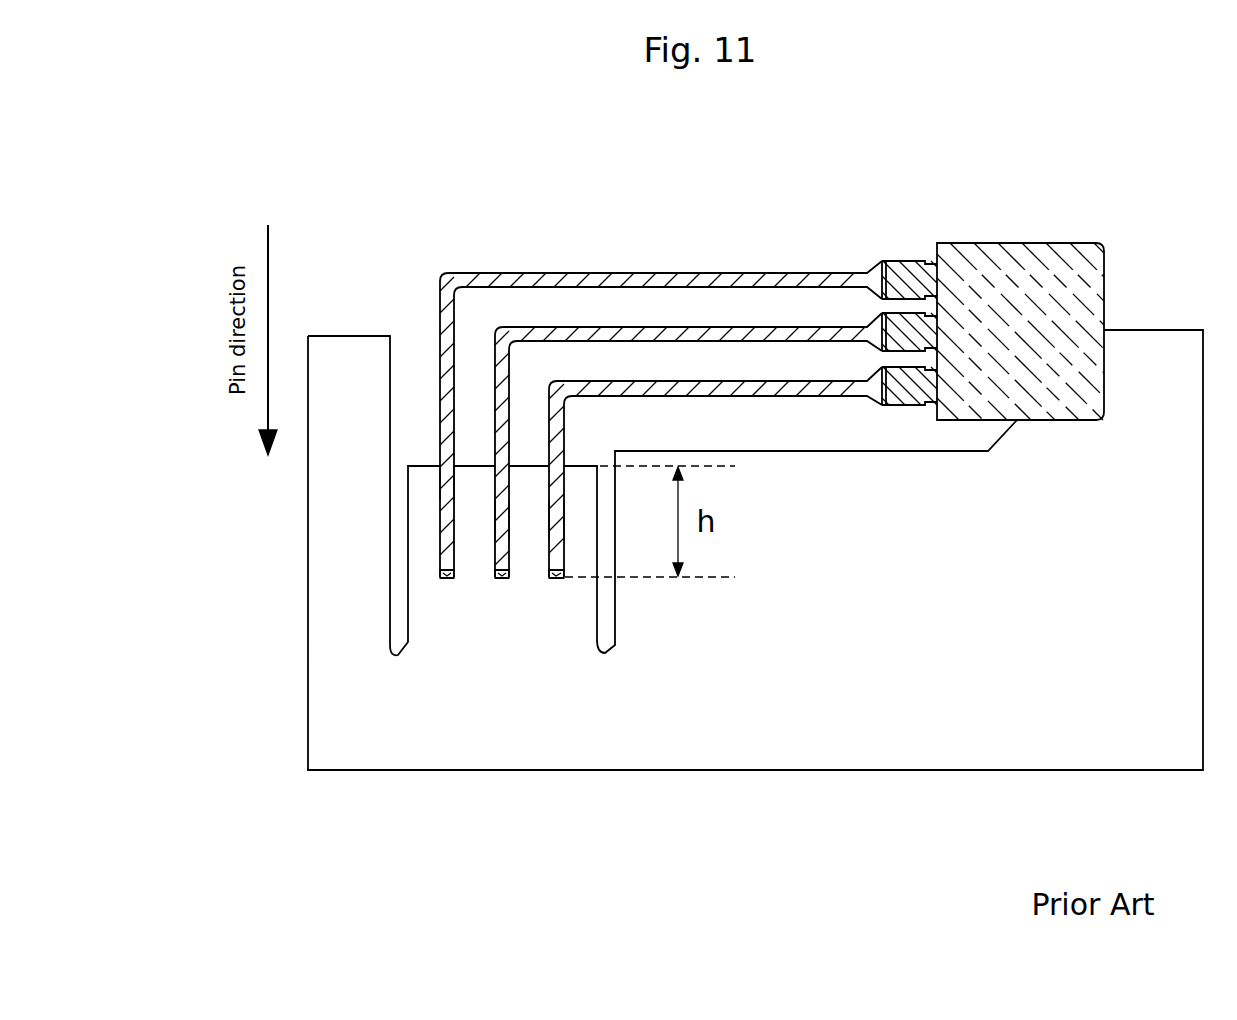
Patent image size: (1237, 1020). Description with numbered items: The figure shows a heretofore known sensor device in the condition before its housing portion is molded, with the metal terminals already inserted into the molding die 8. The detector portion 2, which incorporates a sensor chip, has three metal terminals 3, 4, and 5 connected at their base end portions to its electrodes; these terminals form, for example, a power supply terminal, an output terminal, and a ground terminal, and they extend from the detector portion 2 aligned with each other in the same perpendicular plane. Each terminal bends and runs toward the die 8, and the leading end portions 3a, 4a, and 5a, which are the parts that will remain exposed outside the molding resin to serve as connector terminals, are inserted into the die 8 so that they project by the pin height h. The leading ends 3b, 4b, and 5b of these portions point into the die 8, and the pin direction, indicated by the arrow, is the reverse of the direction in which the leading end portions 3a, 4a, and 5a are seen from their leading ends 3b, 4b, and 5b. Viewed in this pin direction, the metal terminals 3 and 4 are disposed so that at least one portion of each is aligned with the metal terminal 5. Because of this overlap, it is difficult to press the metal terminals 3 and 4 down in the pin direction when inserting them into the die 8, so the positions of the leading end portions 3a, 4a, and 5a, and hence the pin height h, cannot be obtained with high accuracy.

The detector portion 2 is at (1072, 262).
The metal terminal 3 is at (841, 387).
The leading end portion 3a is at (565, 540).
The leading end 3b is at (561, 579).
The metal terminal 4 is at (727, 328).
The leading end portion 4a is at (495, 526).
The leading end 4b is at (505, 579).
The metal terminal 5 is at (635, 272).
The leading end portion 5a is at (440, 472).
The leading end 5b is at (447, 579).
The die 8 is at (865, 745).